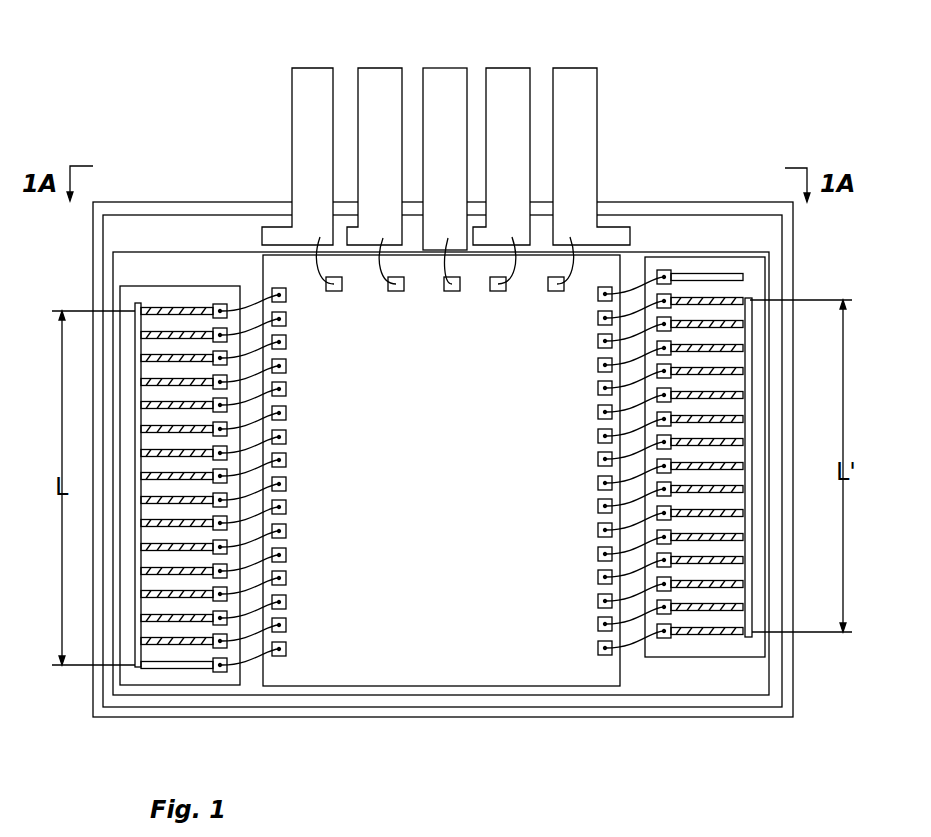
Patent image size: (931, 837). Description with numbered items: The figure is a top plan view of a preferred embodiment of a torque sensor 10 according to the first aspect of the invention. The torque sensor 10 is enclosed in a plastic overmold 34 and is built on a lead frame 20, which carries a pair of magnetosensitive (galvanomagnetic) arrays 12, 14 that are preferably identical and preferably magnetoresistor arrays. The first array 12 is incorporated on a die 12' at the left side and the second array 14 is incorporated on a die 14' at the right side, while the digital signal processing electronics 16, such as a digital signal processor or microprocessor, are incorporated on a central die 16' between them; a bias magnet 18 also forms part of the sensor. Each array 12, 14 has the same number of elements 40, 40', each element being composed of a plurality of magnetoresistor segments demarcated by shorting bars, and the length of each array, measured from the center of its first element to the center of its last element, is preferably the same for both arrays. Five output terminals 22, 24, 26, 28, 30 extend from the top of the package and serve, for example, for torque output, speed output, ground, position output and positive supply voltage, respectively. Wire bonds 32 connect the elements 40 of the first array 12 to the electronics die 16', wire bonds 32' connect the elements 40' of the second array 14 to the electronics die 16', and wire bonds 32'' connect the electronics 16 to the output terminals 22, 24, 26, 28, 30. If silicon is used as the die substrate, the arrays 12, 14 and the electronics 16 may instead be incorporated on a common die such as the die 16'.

The torque sensor 10 is at (146, 95).
The magnetosensitive array 12 is at (179, 421).
The die 12' is at (170, 213).
The magnetosensitive array 14 is at (705, 394).
The die 14' is at (738, 199).
The digital signal processing electronics 16 is at (441, 520).
The die 16' is at (470, 725).
The bias magnet 18 is at (563, 700).
The lead frame 20 is at (197, 250).
The output terminal 22 is at (292, 68).
The output terminal 24 is at (385, 67).
The output terminal 26 is at (433, 67).
The output terminal 28 is at (507, 67).
The output terminal 30 is at (577, 66).
The wire bonds 32 is at (284, 523).
The wire bonds 32' is at (592, 514).
The wire bonds 32'' is at (488, 219).
The plastic overmold 34 is at (133, 718).
The array elements 40 is at (201, 460).
The array elements 40' is at (757, 506).